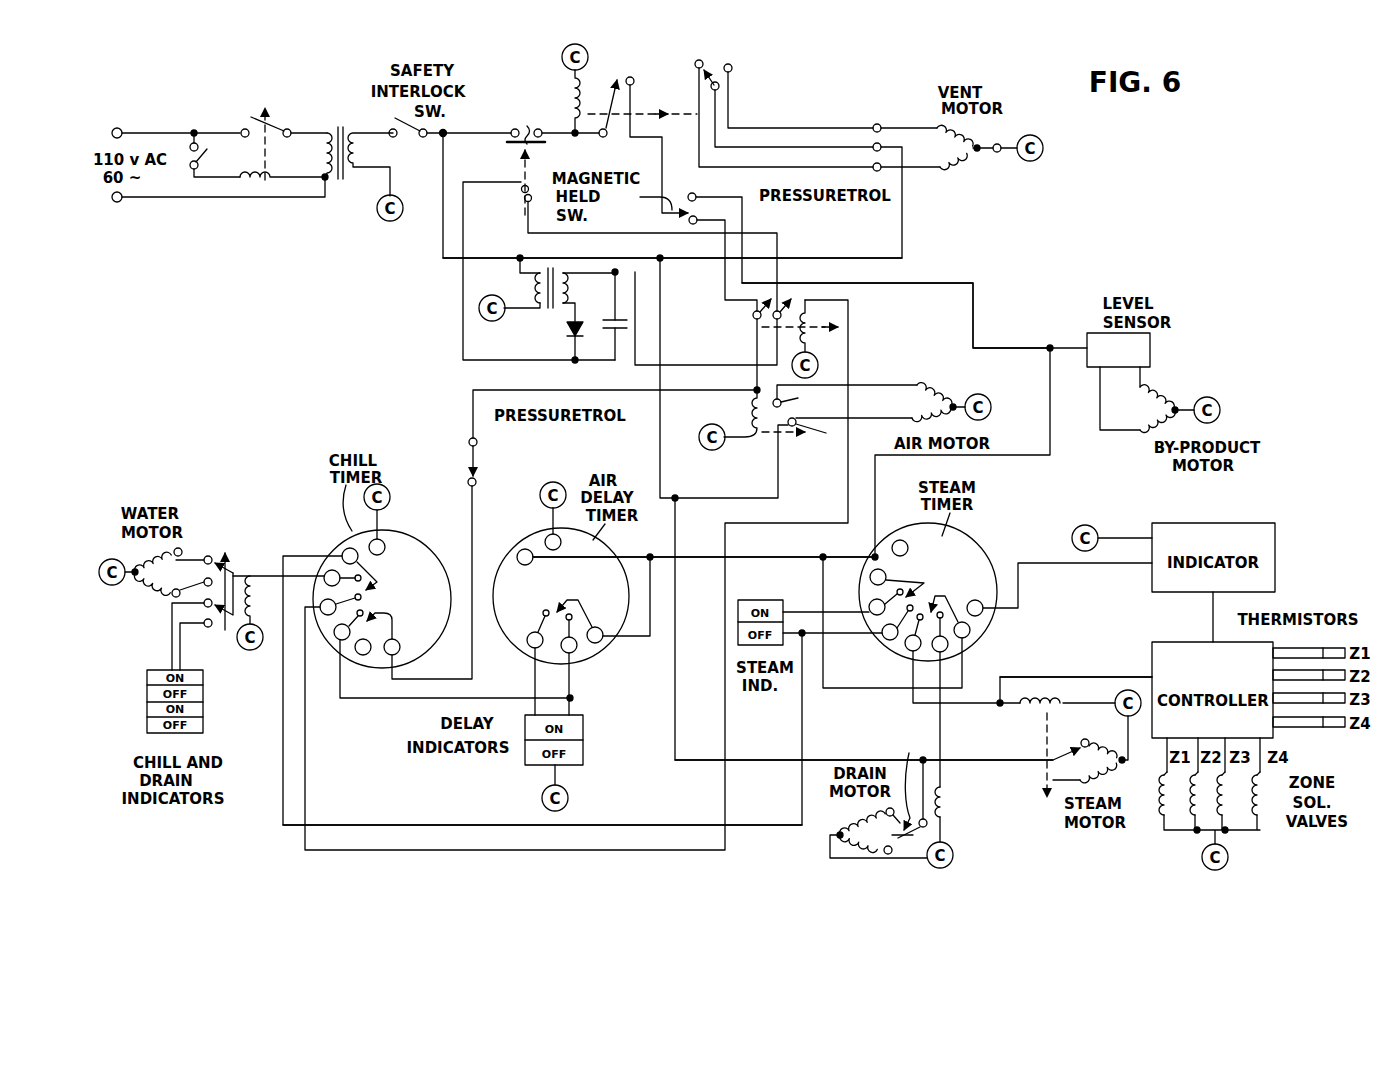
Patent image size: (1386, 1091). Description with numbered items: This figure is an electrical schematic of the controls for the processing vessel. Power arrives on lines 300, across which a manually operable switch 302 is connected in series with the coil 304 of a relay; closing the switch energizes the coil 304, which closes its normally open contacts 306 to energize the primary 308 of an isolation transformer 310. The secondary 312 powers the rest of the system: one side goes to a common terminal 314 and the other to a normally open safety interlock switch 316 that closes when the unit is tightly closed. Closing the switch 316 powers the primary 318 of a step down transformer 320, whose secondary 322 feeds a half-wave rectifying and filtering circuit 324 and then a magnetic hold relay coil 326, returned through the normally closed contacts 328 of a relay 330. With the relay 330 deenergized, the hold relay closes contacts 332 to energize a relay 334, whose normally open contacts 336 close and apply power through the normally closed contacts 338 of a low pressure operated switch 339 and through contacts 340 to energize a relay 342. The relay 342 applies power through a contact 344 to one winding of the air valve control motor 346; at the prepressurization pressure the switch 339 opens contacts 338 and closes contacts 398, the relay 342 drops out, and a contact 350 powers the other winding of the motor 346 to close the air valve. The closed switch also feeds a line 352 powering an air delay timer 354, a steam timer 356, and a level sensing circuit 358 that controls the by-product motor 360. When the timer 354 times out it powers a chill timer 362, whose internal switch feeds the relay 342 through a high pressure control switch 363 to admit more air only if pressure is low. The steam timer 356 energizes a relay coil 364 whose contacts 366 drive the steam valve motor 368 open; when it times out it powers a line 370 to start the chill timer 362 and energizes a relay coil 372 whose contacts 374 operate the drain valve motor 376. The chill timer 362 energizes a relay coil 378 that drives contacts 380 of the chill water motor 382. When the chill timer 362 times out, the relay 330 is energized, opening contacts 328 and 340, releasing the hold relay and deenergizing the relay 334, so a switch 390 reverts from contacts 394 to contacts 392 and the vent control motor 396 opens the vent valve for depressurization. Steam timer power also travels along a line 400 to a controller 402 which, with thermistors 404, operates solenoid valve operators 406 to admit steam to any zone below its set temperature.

The lines 300 is at (170, 199).
The manually operable switch 302 is at (203, 145).
The relay coil 304 is at (257, 190).
The normally open contacts 306 is at (268, 120).
The primary 308 is at (328, 180).
The isolation transformer 310 is at (338, 110).
The secondary 312 is at (360, 152).
The common terminal 314 is at (392, 222).
The safety interlock switch 316 is at (446, 132).
The primary 318 is at (538, 303).
The step down transformer 320 is at (577, 258).
The secondary 322 is at (568, 292).
The half-wave rectifying and filtering circuit 324 is at (566, 342).
The magnetic hold relay coil 326 is at (522, 198).
The normally closed contacts 328 is at (775, 320).
The relay 330 is at (818, 330).
The contacts 332 is at (527, 124).
The relay 334 is at (588, 82).
The normally open contacts 336 is at (633, 78).
The normally closed contacts 338 is at (689, 221).
The low pressure operated switch 339 is at (639, 198).
The normally closed contacts 340 is at (752, 317).
The relay 342 is at (752, 410).
The contact 344 is at (826, 433).
The control motor 346 is at (953, 398).
The contact 350 is at (790, 398).
The line 352 is at (975, 320).
The air delay timer 354 is at (505, 568).
The steam timer 356 is at (975, 556).
The level sensing circuit 358 is at (1140, 348).
The bidirection motor 360 is at (1175, 398).
The chill timer 362 is at (412, 548).
The high pressure control switch 363 is at (468, 442).
The relay coil 364 is at (1040, 708).
The contacts 366 is at (1053, 780).
The steam valve controlling motor 368 is at (1115, 742).
The line 370 is at (421, 825).
The relay coil 372 is at (948, 805).
The contacts 374 is at (905, 783).
The drain valve control motor 376 is at (835, 826).
The relay coil 378 is at (252, 574).
The contacts 380 is at (226, 550).
The chill water control motor 382 is at (155, 600).
The switch 390 is at (720, 80).
The contacts 392 is at (697, 60).
The contacts 394 is at (733, 69).
The vent control motor 396 is at (978, 142).
The contacts 398 is at (694, 194).
The line 400 is at (1076, 677).
The controller 402 is at (1177, 641).
The thermistors 404 is at (1338, 646).
The solenoid valve operators 406 is at (1185, 820).